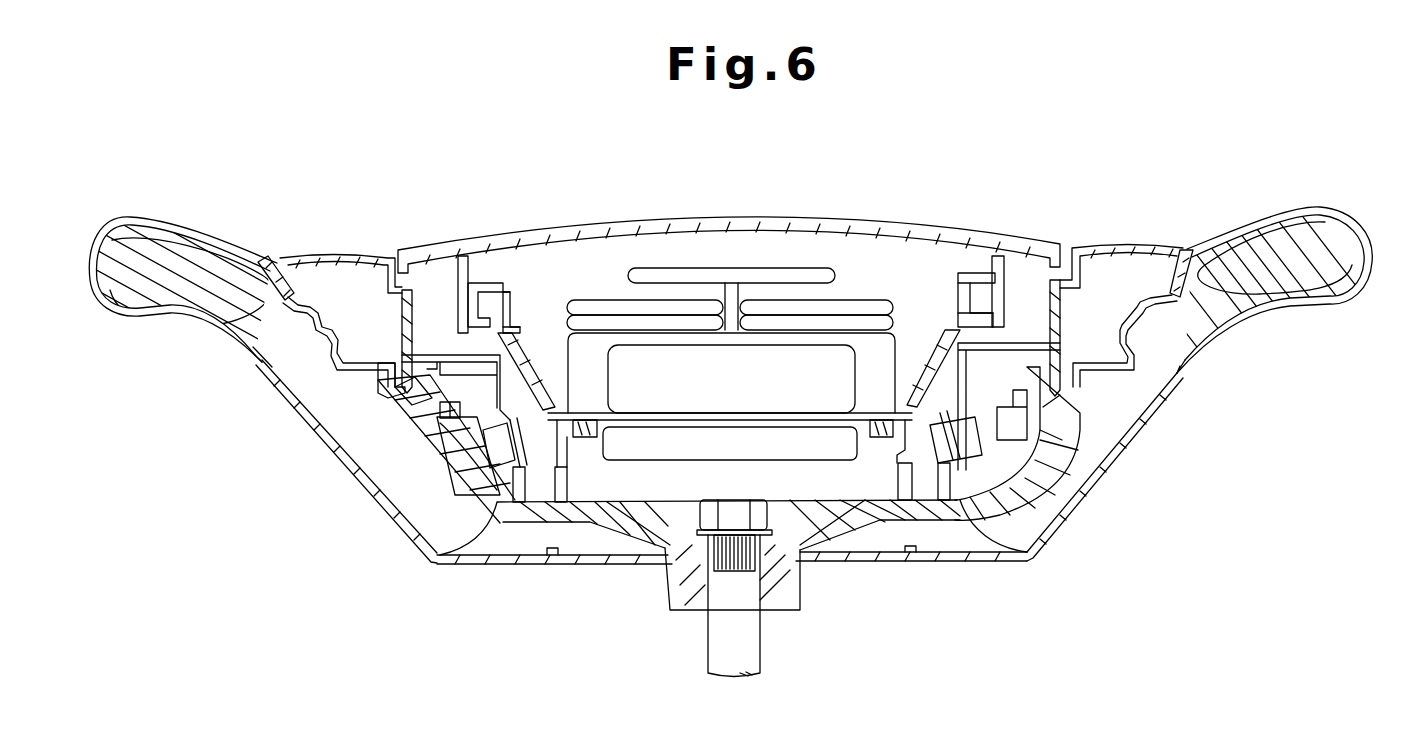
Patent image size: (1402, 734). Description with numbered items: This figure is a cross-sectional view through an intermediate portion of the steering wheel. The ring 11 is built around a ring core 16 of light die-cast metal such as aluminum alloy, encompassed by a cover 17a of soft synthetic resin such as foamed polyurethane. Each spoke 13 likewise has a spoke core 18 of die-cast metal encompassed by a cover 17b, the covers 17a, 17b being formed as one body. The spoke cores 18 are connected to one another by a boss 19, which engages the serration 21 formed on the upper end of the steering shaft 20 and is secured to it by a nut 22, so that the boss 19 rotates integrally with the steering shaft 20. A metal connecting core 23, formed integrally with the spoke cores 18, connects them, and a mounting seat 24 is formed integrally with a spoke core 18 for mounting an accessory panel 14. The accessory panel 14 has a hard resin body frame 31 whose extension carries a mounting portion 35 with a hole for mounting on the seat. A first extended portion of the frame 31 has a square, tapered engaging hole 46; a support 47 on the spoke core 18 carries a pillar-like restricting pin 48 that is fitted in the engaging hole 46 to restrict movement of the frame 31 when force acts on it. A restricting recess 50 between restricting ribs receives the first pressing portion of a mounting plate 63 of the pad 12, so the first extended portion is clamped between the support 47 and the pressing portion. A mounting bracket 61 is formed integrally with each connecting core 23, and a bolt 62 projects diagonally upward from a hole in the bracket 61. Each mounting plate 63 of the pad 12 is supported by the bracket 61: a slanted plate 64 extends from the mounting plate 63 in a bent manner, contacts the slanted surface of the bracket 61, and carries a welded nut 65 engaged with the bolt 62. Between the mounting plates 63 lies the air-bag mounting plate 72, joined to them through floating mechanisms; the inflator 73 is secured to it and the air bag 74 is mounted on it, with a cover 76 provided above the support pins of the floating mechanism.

The ring 11 is at (158, 216).
The pad 12 is at (757, 204).
The spoke 13 is at (437, 514).
The accessory panel 14 is at (328, 242).
The ring core 16 is at (147, 320).
The cover 17a is at (90, 240).
The cover 17b is at (217, 333).
The spoke core 18 is at (434, 565).
The boss 19 is at (797, 593).
The steering shaft 20 is at (760, 643).
The serration 21 is at (707, 565).
The nut 22 is at (743, 503).
The connecting core 23 is at (573, 467).
The mounting seat 24 is at (455, 440).
The body frame 31 is at (353, 258).
The mounting portion 35 is at (428, 450).
The engaging hole 46 is at (423, 357).
The support 47 is at (403, 427).
The restricting pin 48 is at (380, 383).
The restricting recess 50 is at (452, 332).
The mounting bracket 61 is at (498, 420).
The bolt 62 is at (505, 505).
The mounting plate 63 is at (512, 310).
The slanted plate 64 is at (532, 400).
The nut 65 is at (538, 447).
The air-bag mounting plate 72 is at (530, 340).
The inflator 73 is at (658, 450).
The air bag 74 is at (757, 268).
The cover 76 is at (600, 224).